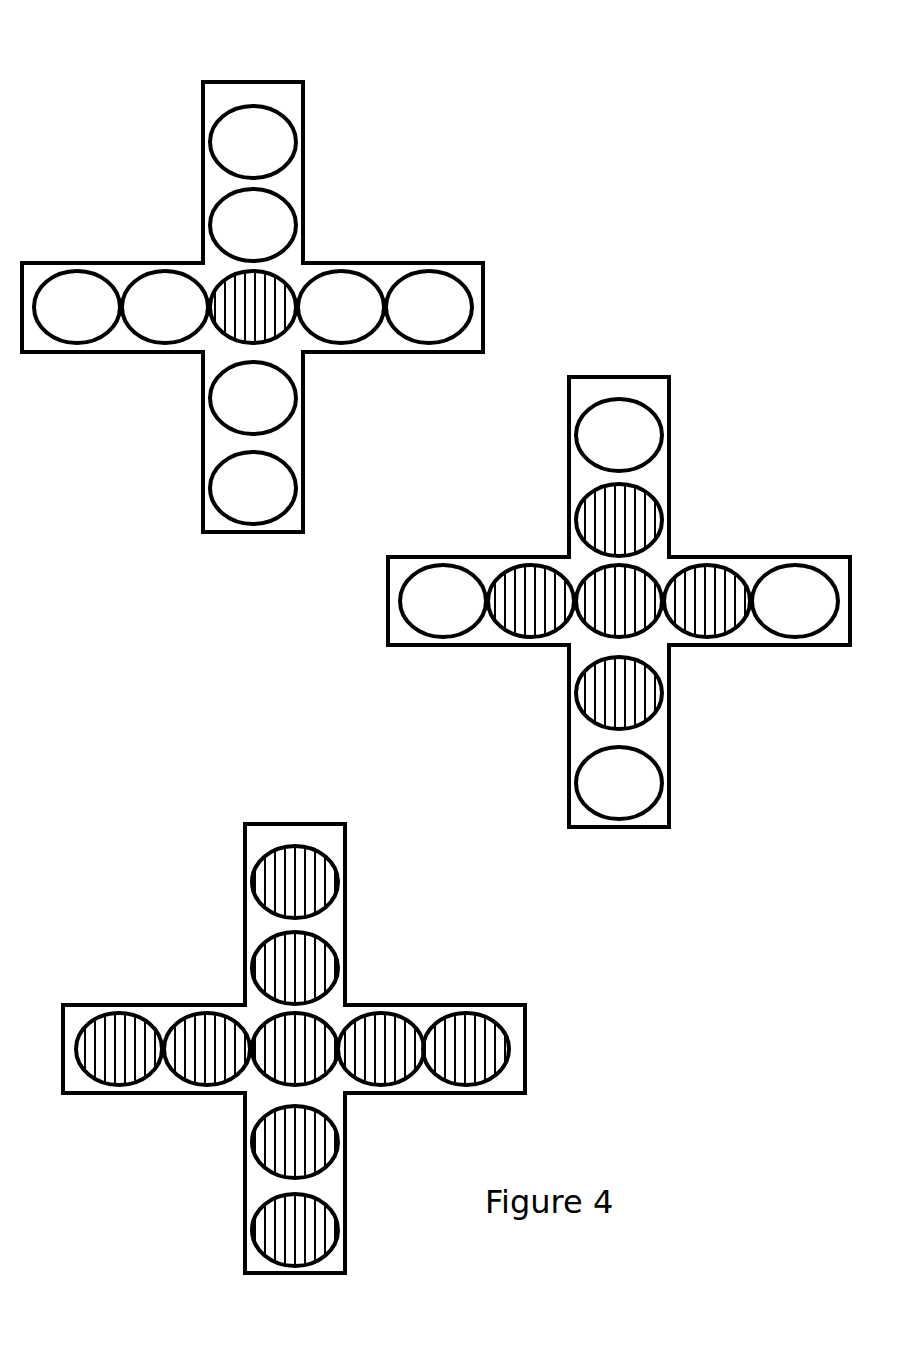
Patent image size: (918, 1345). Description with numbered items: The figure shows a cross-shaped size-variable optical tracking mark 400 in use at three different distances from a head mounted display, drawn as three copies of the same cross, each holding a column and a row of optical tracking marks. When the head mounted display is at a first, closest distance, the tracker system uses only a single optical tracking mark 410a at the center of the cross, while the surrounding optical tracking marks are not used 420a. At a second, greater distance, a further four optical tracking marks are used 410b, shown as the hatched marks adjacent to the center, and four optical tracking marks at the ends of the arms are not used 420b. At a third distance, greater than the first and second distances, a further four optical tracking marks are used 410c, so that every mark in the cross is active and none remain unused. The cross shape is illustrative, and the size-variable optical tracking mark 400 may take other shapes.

The cross-shaped size-variable optical tracking mark 400 is at (252, 82).
The optical tracking marks not used 420a is at (295, 143).
The single optical tracking mark 410a is at (287, 277).
The optical tracking marks not used 420b is at (655, 428).
The further four optical tracking marks used 410b is at (637, 567).
The further four optical tracking marks used 410c is at (318, 1018).